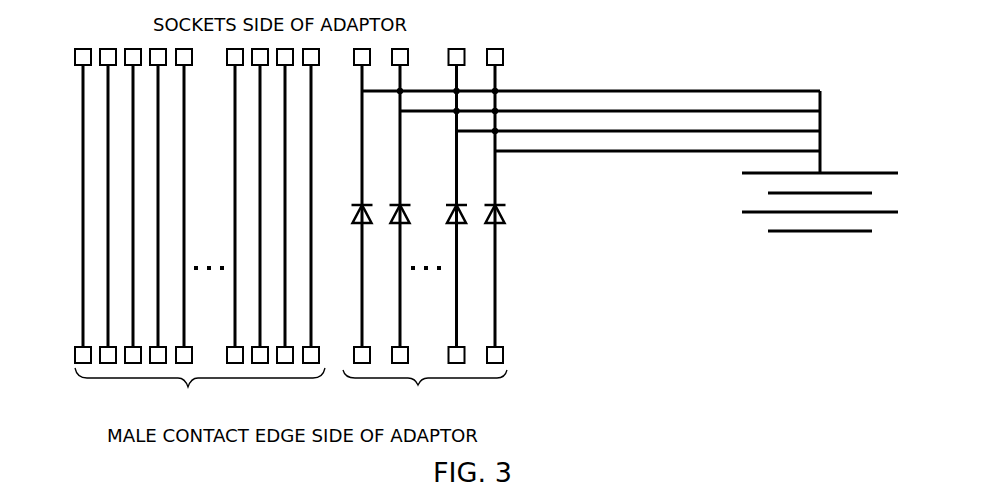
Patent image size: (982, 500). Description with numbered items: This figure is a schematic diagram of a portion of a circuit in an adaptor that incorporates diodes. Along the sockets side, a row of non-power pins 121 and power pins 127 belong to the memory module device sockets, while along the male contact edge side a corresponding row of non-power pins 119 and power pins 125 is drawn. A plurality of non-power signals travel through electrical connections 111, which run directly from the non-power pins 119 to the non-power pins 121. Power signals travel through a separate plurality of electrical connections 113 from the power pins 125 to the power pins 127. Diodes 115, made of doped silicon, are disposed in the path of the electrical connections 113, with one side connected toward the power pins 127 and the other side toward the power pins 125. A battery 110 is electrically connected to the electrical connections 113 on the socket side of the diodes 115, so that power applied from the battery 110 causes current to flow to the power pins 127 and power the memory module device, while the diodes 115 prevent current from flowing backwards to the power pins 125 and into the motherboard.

The battery 110 is at (722, 203).
The electrical connections 111 is at (200, 393).
The electrical connections 113 is at (425, 391).
The diodes 115 is at (502, 220).
The non-power pins 119 is at (76, 354).
The non-power pins 121 is at (81, 59).
The power pins 125 is at (502, 352).
The power pins 127 is at (500, 54).